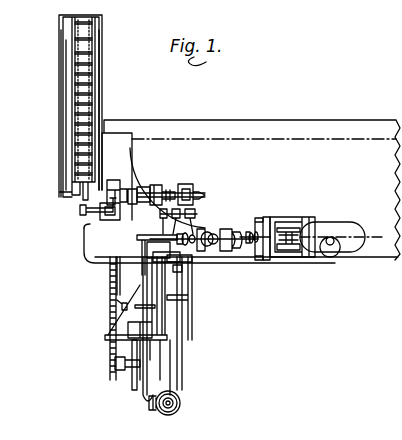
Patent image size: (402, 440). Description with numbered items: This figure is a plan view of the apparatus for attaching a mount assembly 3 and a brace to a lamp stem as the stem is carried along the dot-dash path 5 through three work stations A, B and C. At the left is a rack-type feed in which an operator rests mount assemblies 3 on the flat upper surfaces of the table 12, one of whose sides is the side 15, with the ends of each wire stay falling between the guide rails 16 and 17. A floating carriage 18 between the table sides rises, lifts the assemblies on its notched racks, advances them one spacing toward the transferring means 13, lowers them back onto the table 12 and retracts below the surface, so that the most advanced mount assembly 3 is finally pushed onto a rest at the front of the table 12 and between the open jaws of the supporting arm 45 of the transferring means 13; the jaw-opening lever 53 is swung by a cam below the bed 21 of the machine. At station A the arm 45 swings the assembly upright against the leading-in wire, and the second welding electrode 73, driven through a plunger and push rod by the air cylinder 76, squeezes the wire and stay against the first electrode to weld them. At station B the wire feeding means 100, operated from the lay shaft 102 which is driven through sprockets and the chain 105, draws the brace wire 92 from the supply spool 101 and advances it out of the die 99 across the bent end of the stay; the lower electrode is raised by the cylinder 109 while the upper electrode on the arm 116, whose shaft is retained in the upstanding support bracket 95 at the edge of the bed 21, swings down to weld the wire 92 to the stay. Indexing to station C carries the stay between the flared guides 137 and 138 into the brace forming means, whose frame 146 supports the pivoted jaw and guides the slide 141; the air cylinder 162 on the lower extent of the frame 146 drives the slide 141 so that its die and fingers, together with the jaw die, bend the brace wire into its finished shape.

The mount assembly 3 is at (96, 56).
The path of stem movement 5 is at (198, 137).
The table 12 is at (113, 75).
The transferring means 13 is at (87, 233).
The table side 15 is at (64, 96).
The guide rail 16 is at (103, 105).
The guide rail 17 is at (68, 158).
The floating carriage 18 is at (80, 122).
The bed of the machine 21 is at (100, 263).
The supporting arm 45 is at (110, 179).
The lever 53 is at (83, 211).
The second welding electrode 73 is at (140, 188).
The air cylinder 76 is at (189, 183).
The wire 92 is at (180, 367).
The upstanding support bracket 95 is at (145, 258).
The die 99 is at (182, 270).
The wire feeding means 100 is at (198, 294).
The supply spool 101 is at (181, 409).
The lay shaft 102 is at (122, 373).
The chain 105 is at (120, 307).
The cylinder 109 is at (220, 230).
The arm 116 is at (137, 238).
The guide 137 is at (256, 260).
The guide 138 is at (250, 228).
The slide 141 is at (288, 250).
The frame 146 is at (300, 219).
The air cylinder 162 is at (346, 221).
The work station A is at (137, 175).
The work station B is at (196, 243).
The work station C is at (276, 265).